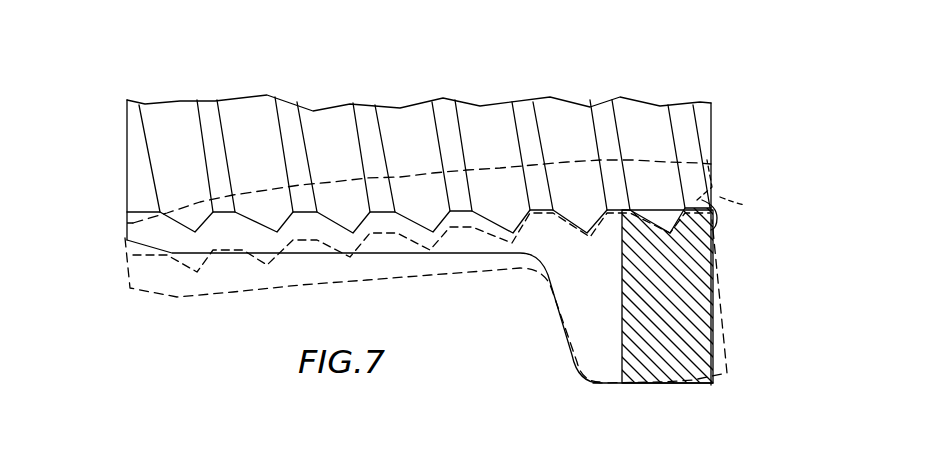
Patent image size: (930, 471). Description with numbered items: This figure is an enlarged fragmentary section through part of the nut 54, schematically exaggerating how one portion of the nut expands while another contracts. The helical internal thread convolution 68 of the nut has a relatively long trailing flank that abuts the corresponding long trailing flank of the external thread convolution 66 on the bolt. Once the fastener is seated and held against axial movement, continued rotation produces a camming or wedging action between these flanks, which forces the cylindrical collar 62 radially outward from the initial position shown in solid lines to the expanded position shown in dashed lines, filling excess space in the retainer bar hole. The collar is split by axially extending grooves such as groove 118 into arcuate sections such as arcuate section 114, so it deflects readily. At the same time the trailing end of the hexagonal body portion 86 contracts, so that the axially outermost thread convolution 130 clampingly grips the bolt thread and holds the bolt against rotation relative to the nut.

The internal thread convolution 68 is at (212, 103).
The nut 54 is at (747, 117).
The arcuate section 114 is at (128, 197).
The axially outermost thread convolution 130 is at (718, 220).
The collar 62 is at (180, 257).
The groove 118 is at (576, 262).
The hexagonal body portion 86 is at (688, 386).
The external thread convolution 66 is at (757, 470).